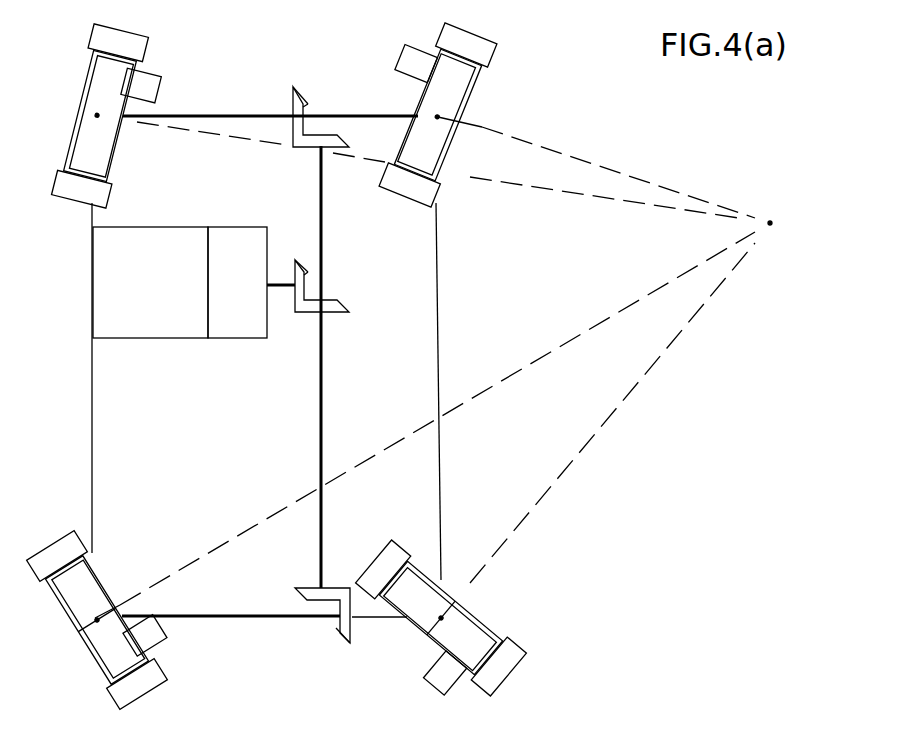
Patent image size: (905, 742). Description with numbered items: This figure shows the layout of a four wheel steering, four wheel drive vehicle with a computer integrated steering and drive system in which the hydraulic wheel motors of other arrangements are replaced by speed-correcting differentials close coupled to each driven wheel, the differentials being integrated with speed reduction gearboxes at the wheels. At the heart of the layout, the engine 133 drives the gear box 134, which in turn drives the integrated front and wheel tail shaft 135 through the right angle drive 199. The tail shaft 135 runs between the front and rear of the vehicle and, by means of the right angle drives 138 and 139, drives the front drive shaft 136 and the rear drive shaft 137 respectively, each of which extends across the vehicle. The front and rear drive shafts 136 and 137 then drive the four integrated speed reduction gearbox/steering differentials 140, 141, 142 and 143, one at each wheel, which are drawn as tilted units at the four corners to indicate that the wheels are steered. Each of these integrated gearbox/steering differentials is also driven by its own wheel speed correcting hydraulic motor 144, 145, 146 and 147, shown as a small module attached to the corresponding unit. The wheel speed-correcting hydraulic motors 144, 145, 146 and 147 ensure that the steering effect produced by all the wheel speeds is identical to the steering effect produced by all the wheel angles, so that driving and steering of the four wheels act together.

The engine 133 is at (168, 298).
The gear box 134 is at (252, 297).
The integrated front and wheel tail shaft 135 is at (322, 189).
The front drive shaft 136 is at (203, 108).
The rear drive shaft 137 is at (213, 614).
The right angle drive 138 is at (302, 132).
The right angle drive 139 is at (310, 589).
The right angle drive 199 is at (297, 313).
The integrated speed reduction gearbox/steering differential 140 is at (456, 107).
The integrated speed reduction gearbox/steering differential 141 is at (112, 105).
The integrated speed reduction gearbox/steering differential 142 is at (423, 604).
The integrated speed reduction gearbox/steering differential 143 is at (90, 606).
The wheel speed correcting hydraulic motor 144 is at (416, 64).
The wheel speed correcting hydraulic motor 145 is at (141, 85).
The wheel speed correcting hydraulic motor 146 is at (445, 673).
The wheel speed correcting hydraulic motor 147 is at (145, 635).